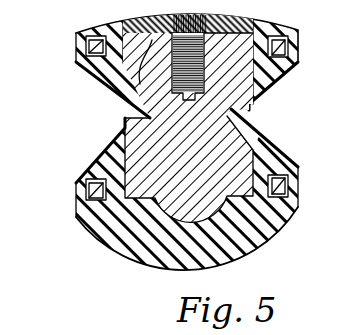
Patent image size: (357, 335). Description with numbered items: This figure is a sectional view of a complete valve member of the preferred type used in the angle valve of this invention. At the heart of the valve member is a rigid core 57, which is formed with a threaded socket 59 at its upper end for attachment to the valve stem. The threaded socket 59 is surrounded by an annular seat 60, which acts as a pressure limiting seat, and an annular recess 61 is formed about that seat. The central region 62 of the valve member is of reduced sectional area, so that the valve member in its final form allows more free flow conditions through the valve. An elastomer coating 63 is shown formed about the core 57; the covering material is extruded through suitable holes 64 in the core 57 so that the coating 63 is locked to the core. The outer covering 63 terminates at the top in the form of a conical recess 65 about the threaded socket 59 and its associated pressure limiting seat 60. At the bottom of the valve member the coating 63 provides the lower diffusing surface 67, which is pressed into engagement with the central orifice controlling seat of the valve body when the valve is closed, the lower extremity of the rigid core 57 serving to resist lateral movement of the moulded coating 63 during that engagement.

The rigid core 57 is at (230, 111).
The threaded socket 59 is at (198, 80).
The annular seat 60 is at (150, 119).
The annular recess 61 is at (103, 83).
The central region 62 is at (130, 124).
The elastomer coating 63 is at (297, 205).
The holes 64 is at (98, 57).
The conical recess 65 is at (222, 24).
The lower diffusing surface 67 is at (263, 243).